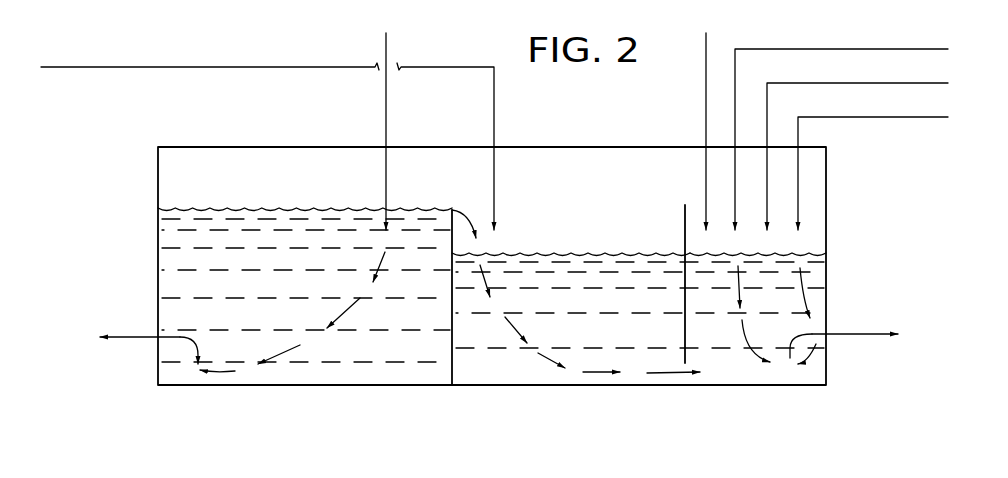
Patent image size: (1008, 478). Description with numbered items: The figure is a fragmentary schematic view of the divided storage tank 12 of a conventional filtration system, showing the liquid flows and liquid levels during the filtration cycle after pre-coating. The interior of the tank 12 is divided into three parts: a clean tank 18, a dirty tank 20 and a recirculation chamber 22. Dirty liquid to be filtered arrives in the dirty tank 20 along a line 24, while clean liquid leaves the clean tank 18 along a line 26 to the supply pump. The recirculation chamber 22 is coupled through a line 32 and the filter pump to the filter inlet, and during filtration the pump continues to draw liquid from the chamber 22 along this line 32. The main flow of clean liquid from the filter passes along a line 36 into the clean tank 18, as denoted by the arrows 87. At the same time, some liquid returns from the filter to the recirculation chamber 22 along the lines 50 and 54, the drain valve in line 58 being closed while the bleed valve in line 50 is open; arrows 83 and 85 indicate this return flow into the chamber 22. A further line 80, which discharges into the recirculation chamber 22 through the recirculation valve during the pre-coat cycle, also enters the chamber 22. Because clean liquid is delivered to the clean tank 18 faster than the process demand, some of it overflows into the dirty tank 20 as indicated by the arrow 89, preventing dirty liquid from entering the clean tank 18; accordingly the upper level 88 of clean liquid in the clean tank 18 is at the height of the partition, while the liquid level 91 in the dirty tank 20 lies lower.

The divided storage tank 12 is at (362, 390).
The clean tank 18 is at (273, 190).
The dirty tank 20 is at (587, 190).
The recirculation chamber 22 is at (764, 207).
The line 24 is at (496, 137).
The line 26 is at (134, 340).
The line 32 is at (853, 337).
The line 36 is at (386, 112).
The line 50 is at (888, 50).
The line 54 is at (859, 118).
The line 58 is at (873, 84).
The line 80 is at (704, 108).
The arrows 83 is at (752, 355).
The arrows 85 is at (803, 285).
The arrows 87 is at (283, 357).
The upper level 88 is at (222, 210).
The arrow 89 is at (466, 206).
The liquid level 91 is at (607, 257).